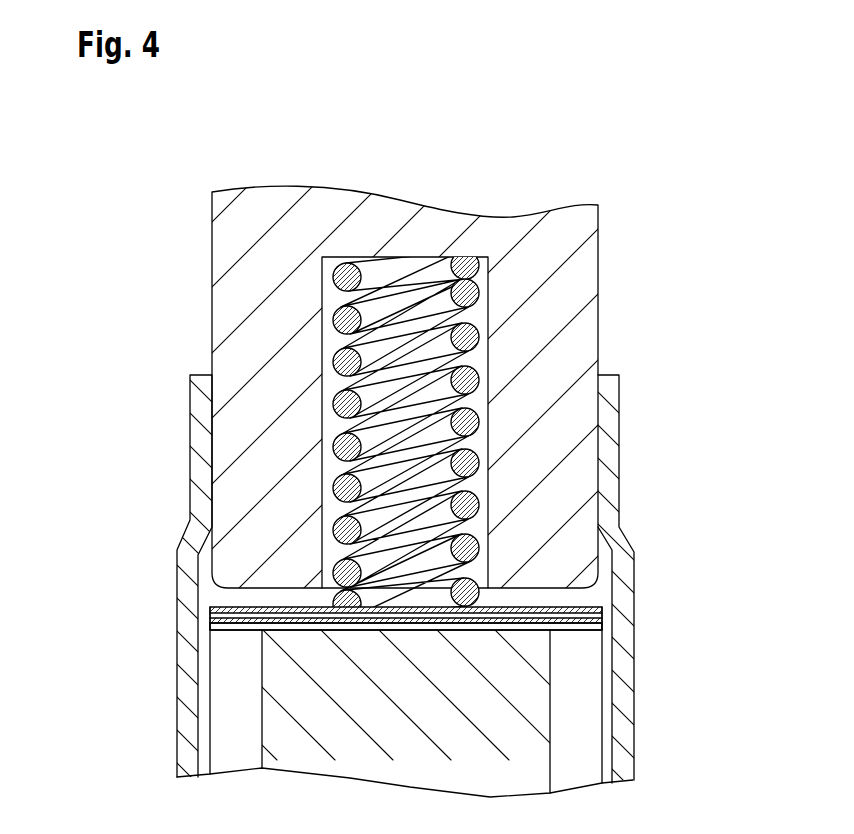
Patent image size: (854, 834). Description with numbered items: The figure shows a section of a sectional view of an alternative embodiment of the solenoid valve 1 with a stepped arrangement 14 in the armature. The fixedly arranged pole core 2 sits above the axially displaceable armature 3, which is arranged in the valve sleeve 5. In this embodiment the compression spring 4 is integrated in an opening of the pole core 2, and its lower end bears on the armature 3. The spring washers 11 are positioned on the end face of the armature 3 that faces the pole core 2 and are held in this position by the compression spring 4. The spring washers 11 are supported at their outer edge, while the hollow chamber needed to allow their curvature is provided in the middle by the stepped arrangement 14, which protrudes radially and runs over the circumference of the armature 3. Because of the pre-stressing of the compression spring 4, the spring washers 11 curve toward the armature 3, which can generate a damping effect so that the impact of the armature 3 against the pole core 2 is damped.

The solenoid valve 1 is at (565, 150).
The pole core 2 is at (570, 336).
The armature 3 is at (520, 717).
The compression spring 4 is at (470, 505).
The upper valve sleeve 5 is at (608, 449).
The spring washers 11 is at (602, 607).
The stepped arrangement 14 is at (287, 629).